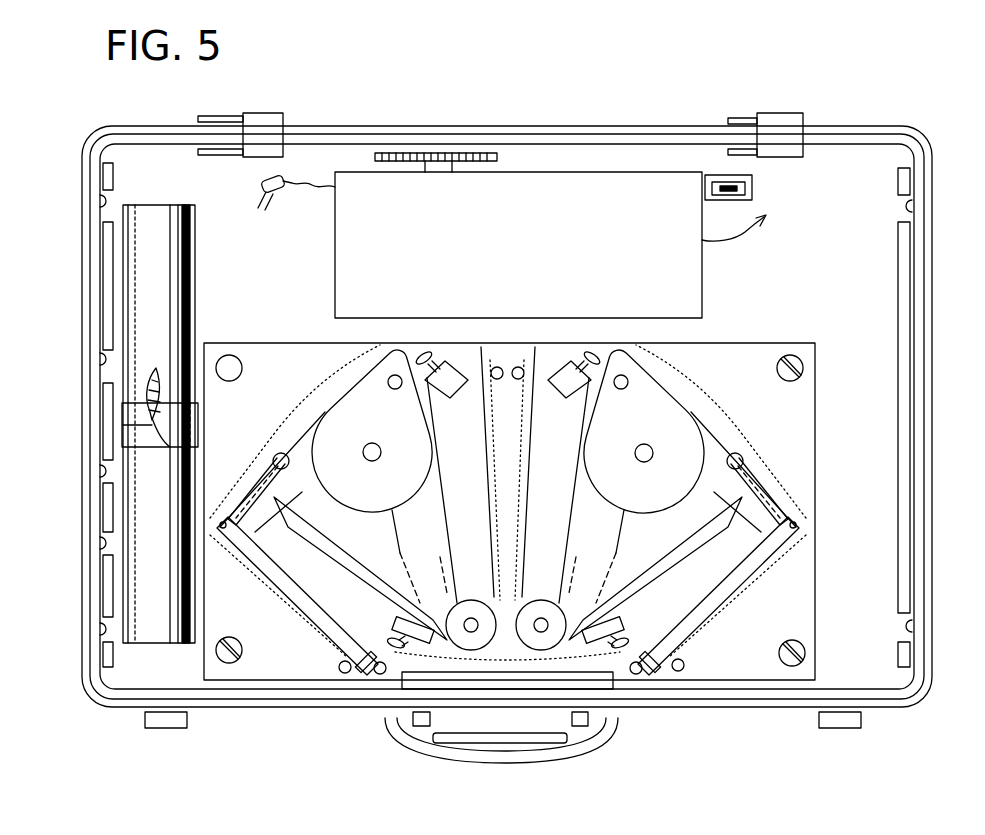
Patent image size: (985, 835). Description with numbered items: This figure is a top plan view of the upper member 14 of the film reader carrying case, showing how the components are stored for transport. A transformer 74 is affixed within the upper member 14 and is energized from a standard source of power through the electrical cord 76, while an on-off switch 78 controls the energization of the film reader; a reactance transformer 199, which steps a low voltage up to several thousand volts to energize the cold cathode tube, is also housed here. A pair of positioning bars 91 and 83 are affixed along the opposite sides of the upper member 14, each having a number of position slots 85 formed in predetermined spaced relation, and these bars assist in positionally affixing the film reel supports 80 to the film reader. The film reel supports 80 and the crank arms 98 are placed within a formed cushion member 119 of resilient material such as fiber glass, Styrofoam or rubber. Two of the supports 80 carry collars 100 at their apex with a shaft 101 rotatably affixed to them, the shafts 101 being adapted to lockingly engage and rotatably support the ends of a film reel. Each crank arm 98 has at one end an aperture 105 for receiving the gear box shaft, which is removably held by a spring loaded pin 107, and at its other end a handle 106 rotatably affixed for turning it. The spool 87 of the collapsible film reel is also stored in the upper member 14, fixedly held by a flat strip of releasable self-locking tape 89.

The upper member 14 is at (508, 128).
The positioning bar 91 is at (905, 298).
The positioning bar 83 is at (103, 167).
The position slots 85 is at (103, 200).
The spool 87 is at (157, 242).
The releasable self-locking tape 89 is at (152, 432).
The reactance transformer 199 is at (615, 200).
The transformer 74 is at (360, 187).
The electrical cord 76 is at (278, 183).
The on-off switch 78 is at (752, 188).
The cushion member 119 is at (245, 347).
The handle 106 is at (282, 453).
The crank arm 98 is at (333, 636).
The aperture 105 is at (355, 668).
The spring loaded pin 107 is at (375, 676).
The collars 100 is at (440, 545).
The film reel supports 80 is at (543, 365).
The shaft 101 is at (471, 622).